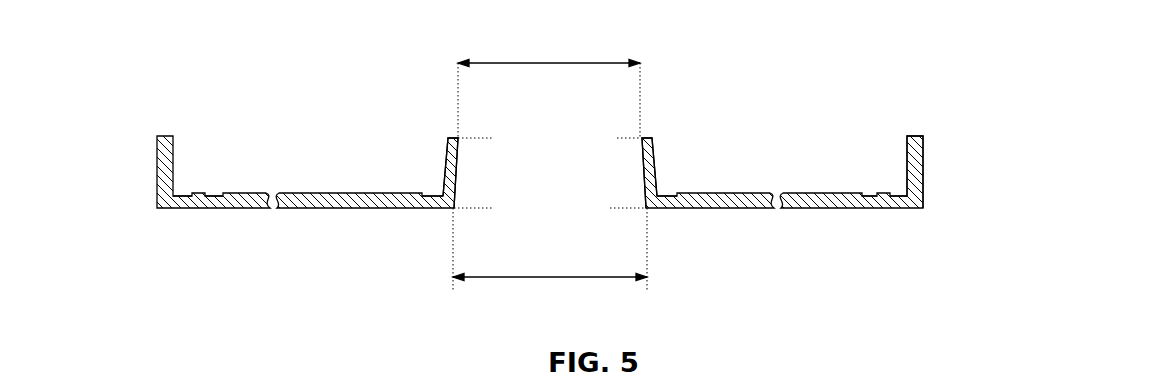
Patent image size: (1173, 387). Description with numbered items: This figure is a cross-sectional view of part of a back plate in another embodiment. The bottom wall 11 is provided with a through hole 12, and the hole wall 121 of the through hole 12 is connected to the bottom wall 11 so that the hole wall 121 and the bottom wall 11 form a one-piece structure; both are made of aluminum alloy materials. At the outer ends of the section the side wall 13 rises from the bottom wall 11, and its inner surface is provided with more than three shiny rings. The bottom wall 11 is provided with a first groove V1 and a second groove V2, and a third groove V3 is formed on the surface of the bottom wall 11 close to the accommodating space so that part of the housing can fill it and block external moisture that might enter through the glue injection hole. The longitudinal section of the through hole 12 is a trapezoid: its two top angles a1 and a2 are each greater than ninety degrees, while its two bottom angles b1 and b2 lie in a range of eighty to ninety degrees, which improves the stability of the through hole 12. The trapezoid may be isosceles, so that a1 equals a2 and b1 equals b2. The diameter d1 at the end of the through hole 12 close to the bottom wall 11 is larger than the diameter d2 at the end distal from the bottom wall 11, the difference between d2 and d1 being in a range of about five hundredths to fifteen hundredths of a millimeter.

The bottom wall 11 is at (392, 208).
The through hole 12 is at (583, 192).
The hole wall 121 is at (456, 168).
The side wall 13 is at (923, 162).
The first groove V1 is at (432, 191).
The second groove V2 is at (181, 196).
The third groove V3 is at (212, 196).
The top angle a1 is at (471, 150).
The bottom angle b1 is at (471, 196).
The top angle a2 is at (627, 150).
The bottom angle b2 is at (637, 196).
The diameter of end of through hole close to bottom wall d1 is at (550, 256).
The diameter of end of through hole distal from bottom wall d2 is at (549, 88).